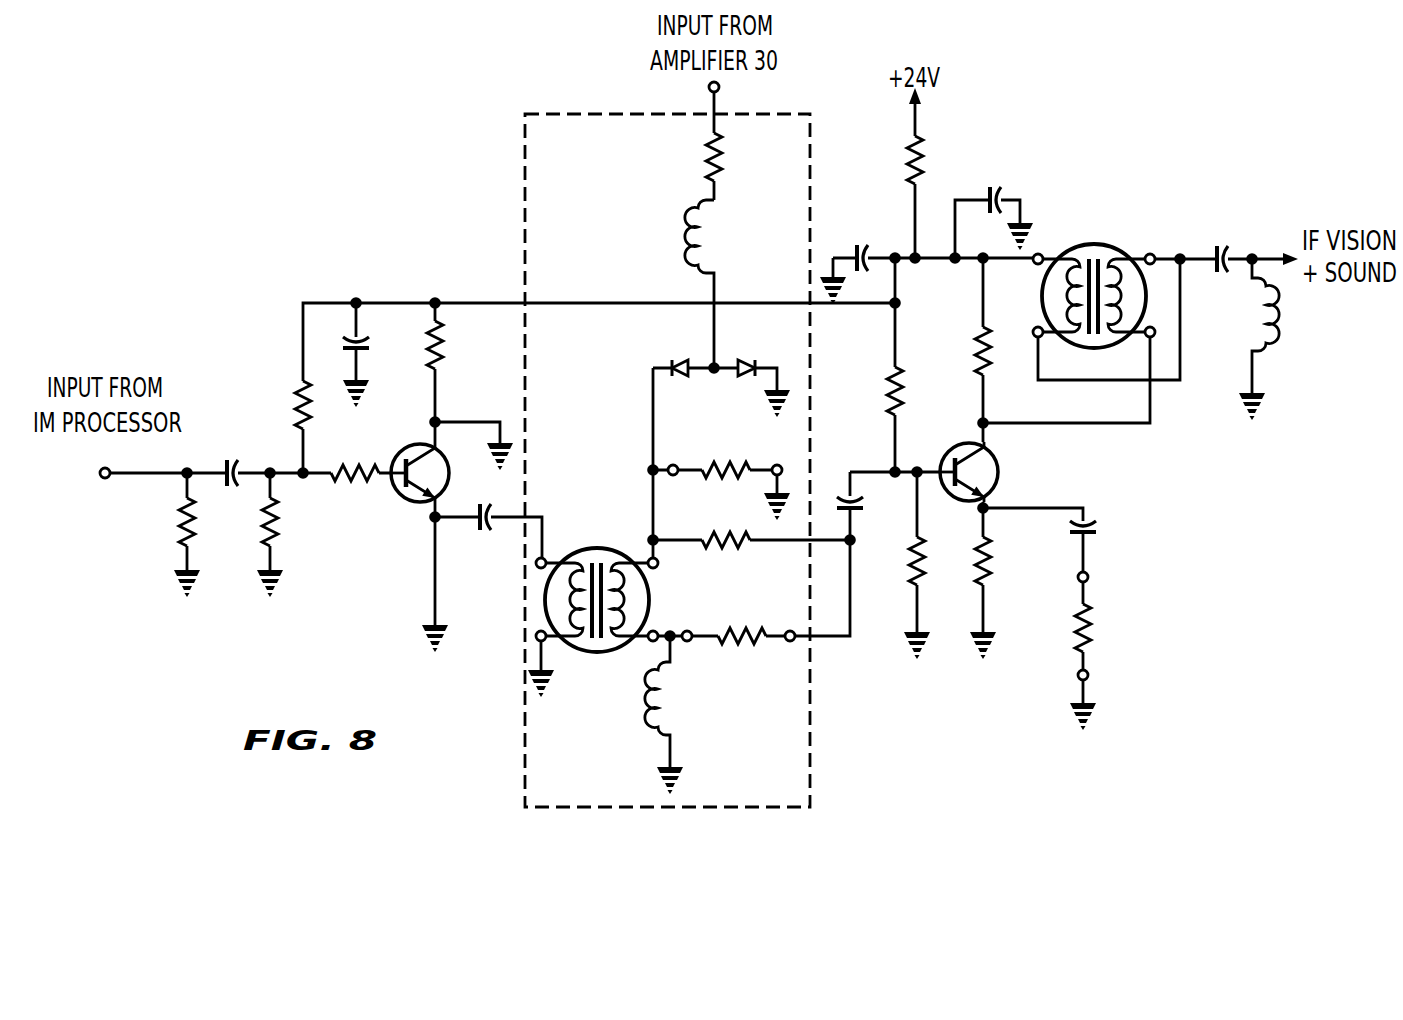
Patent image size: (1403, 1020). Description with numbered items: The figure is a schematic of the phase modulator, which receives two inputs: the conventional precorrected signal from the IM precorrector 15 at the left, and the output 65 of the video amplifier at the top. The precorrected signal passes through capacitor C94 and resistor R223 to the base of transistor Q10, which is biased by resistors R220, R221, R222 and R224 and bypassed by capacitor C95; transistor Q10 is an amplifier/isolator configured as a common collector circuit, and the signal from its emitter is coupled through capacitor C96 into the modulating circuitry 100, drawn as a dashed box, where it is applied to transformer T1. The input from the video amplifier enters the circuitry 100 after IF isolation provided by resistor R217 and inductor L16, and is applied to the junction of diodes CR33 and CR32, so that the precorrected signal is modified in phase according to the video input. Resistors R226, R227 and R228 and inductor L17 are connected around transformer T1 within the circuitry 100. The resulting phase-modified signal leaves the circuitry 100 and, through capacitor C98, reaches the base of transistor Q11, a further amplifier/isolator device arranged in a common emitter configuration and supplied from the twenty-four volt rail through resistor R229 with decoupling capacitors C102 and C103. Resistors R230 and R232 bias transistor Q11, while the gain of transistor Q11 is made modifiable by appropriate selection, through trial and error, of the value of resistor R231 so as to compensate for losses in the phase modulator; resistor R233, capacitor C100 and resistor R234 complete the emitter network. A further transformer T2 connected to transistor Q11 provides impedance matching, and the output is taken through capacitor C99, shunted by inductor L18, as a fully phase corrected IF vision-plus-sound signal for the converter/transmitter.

The IM precorrector 15 is at (102, 457).
The output of the video amplifier 65 is at (720, 88).
The modulating circuitry 100 is at (818, 744).
The resistor R220 is at (181, 521).
The resistor R221 is at (296, 396).
The resistor R222 is at (275, 532).
The resistor R223 is at (354, 468).
The resistor R224 is at (443, 366).
The capacitor C94 is at (238, 459).
The capacitor C95 is at (367, 341).
The capacitor C96 is at (488, 532).
The transistor Q10 is at (406, 503).
The resistor R217 is at (707, 159).
The inductor L16 is at (684, 228).
The diode CR33 is at (672, 361).
The diode CR32 is at (748, 362).
The resistor R226 is at (722, 461).
The resistor R227 is at (735, 532).
The transformer T1 is at (651, 595).
The resistor R228 is at (745, 632).
The inductor L17 is at (641, 705).
The capacitor C102 is at (867, 245).
The resistor R229 is at (906, 164).
The capacitor C103 is at (1000, 188).
The resistor R232 is at (975, 344).
The resistor R230 is at (904, 399).
The transformer T2 is at (1094, 245).
The capacitor C99 is at (1229, 245).
The inductor L18 is at (1286, 325).
The capacitor C98 is at (847, 494).
The transistor Q11 is at (1000, 460).
The capacitor C100 is at (1093, 528).
The resistor R231 is at (911, 570).
The resistor R233 is at (978, 568).
The resistor R234 is at (1100, 622).